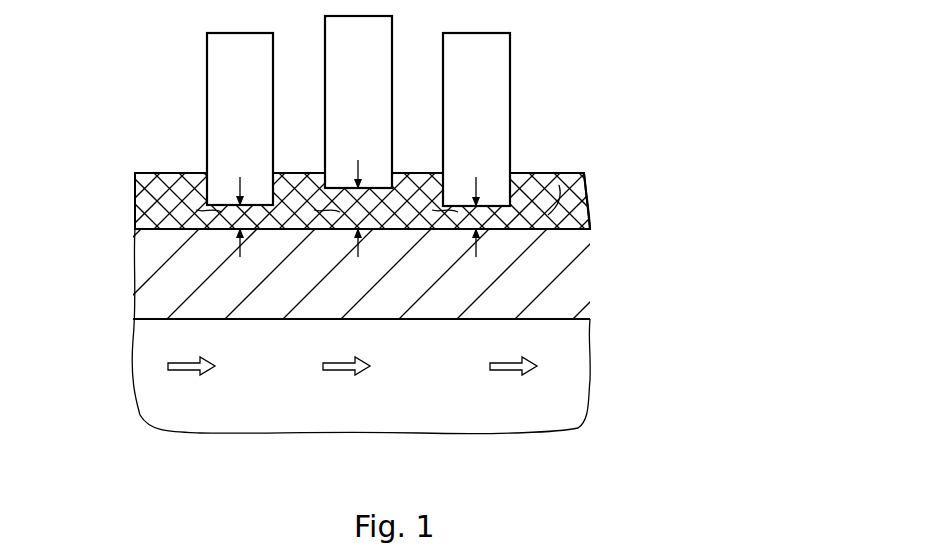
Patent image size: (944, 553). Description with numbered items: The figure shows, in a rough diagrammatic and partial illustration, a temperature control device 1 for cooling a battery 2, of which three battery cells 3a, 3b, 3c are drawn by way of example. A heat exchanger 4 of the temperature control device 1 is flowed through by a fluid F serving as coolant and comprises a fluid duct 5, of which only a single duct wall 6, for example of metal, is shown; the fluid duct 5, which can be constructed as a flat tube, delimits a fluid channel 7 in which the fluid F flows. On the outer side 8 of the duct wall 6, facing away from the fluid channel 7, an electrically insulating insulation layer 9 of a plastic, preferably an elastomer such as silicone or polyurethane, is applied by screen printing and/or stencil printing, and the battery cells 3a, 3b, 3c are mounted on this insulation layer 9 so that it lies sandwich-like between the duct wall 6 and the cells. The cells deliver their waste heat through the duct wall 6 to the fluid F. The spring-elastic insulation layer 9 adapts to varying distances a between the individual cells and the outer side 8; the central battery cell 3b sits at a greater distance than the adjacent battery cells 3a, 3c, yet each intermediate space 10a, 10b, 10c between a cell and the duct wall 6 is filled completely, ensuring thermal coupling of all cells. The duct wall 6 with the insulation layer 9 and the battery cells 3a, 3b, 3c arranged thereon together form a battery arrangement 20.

The temperature control device 1 is at (606, 422).
The battery 2 is at (190, 95).
The battery cell 3a is at (252, 128).
The battery cell 3b is at (370, 109).
The battery cell 3c is at (488, 128).
The heat exchanger 4 is at (116, 283).
The fluid duct 5 is at (150, 224).
The duct wall 6 is at (576, 272).
The fluid channel 7 is at (437, 391).
The outer side 8 is at (551, 214).
The insulation layer 9 is at (583, 198).
The intermediate space 10a is at (195, 208).
The intermediate space 10b is at (313, 208).
The intermediate space 10c is at (431, 208).
The battery arrangement 20 is at (549, 92).
The distance a is at (234, 239).
The fluid F is at (341, 369).